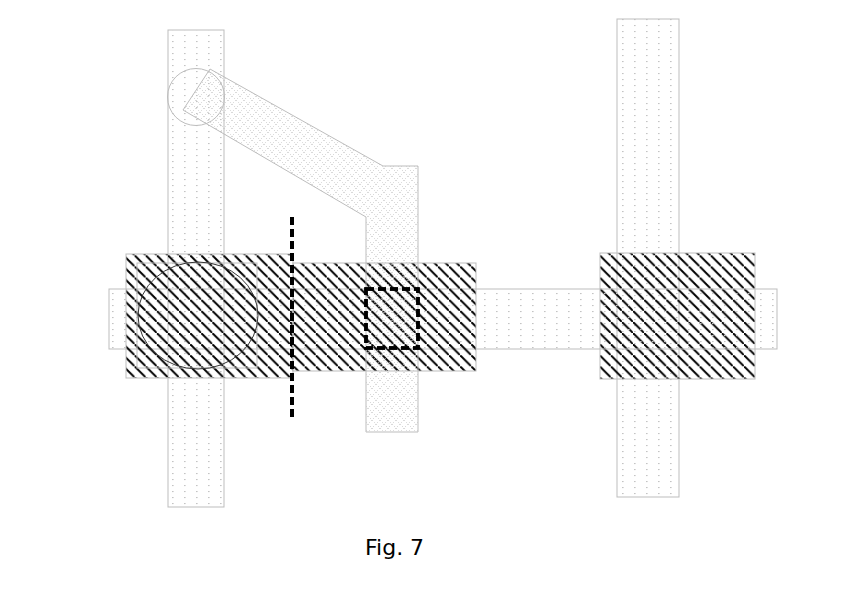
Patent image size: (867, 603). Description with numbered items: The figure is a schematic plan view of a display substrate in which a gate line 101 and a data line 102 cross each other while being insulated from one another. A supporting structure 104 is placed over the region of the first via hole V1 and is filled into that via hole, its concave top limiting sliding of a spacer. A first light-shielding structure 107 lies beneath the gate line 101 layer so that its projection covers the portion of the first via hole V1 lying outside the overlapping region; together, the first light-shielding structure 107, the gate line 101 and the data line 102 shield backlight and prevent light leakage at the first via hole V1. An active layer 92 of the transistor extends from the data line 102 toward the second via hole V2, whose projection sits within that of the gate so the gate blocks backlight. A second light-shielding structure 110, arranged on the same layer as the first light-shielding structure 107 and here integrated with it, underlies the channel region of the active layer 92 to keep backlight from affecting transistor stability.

The gate line 101 is at (109, 319).
The data line 102 is at (167, 163).
The supporting structure 104 is at (137, 380).
The first light-shielding structure 107 is at (276, 380).
The second light-shielding structure 110 is at (455, 272).
The active layer 92 is at (318, 155).
The first via hole V1 is at (126, 272).
The second via hole V2 is at (418, 350).